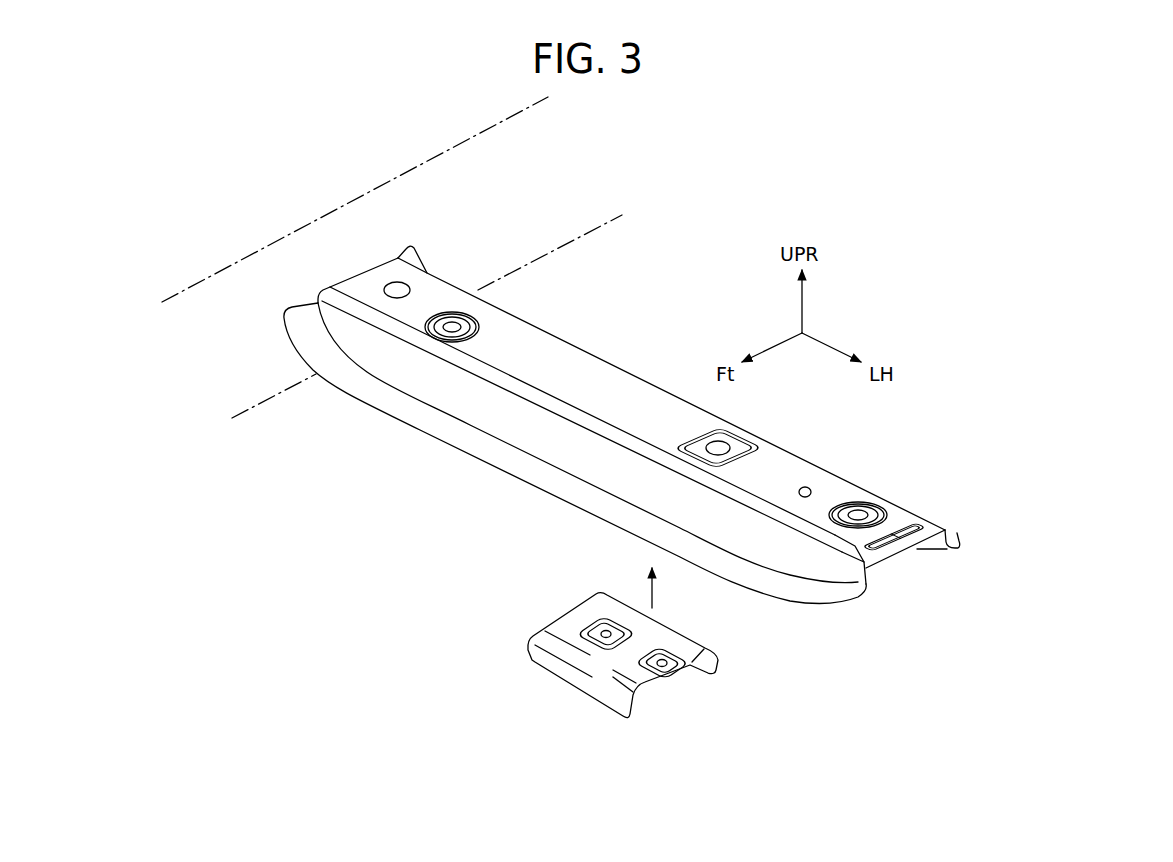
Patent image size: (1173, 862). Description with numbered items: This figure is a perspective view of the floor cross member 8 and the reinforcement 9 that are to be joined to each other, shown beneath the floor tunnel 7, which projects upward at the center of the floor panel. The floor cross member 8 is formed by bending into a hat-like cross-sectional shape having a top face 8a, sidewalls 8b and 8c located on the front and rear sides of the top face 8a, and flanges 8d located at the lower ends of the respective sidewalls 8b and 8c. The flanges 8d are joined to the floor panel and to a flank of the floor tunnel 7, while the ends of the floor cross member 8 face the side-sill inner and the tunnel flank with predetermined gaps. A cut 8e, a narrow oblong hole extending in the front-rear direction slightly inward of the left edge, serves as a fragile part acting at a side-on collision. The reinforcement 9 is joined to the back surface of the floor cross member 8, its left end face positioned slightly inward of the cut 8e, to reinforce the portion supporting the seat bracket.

The floor tunnel 7 is at (532, 183).
The floor cross member 8 is at (617, 363).
The top face 8a is at (553, 355).
The sidewall 8b is at (477, 415).
The sidewall 8c is at (957, 527).
The flange 8d is at (545, 487).
The cut 8e is at (892, 553).
The reinforcement 9 is at (573, 680).